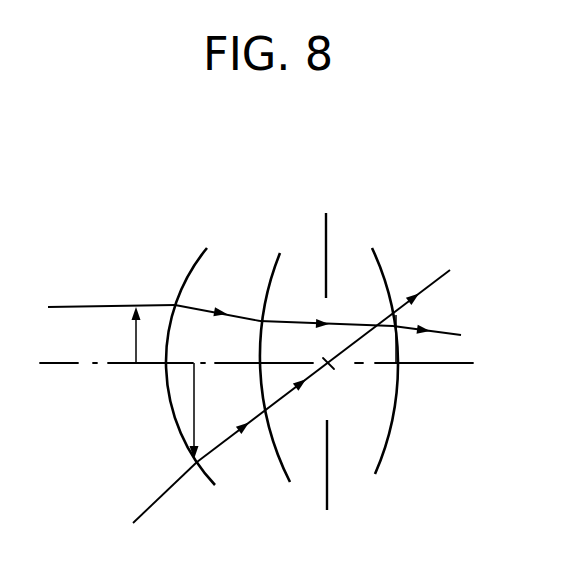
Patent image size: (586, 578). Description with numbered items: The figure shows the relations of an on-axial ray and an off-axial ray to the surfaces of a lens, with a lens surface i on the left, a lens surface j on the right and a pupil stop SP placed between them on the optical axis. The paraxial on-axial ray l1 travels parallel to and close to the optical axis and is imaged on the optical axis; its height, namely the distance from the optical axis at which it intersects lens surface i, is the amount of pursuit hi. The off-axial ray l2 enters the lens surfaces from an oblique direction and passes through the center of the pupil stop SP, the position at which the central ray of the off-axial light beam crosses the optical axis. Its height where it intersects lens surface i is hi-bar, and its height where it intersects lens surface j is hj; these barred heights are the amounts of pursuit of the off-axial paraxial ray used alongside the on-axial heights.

The i-th lens surface i is at (190, 352).
The j-th lens surface j is at (385, 358).
The pupil stop SP is at (327, 243).
The paraxial on-axial ray l1 is at (254, 304).
The off-axial ray l2 is at (276, 407).
The height of paraxial on-axial ray at surface i hi is at (462, 351).
The height of off-axial ray at surface i hi-bar is at (224, 383).
The height of off-axial ray at surface j hj is at (394, 341).